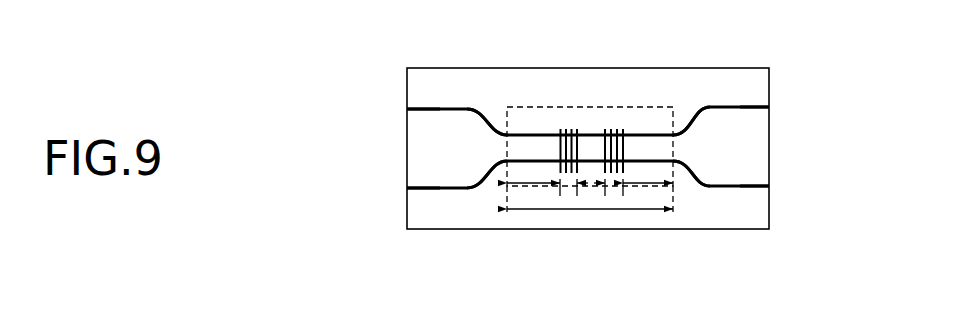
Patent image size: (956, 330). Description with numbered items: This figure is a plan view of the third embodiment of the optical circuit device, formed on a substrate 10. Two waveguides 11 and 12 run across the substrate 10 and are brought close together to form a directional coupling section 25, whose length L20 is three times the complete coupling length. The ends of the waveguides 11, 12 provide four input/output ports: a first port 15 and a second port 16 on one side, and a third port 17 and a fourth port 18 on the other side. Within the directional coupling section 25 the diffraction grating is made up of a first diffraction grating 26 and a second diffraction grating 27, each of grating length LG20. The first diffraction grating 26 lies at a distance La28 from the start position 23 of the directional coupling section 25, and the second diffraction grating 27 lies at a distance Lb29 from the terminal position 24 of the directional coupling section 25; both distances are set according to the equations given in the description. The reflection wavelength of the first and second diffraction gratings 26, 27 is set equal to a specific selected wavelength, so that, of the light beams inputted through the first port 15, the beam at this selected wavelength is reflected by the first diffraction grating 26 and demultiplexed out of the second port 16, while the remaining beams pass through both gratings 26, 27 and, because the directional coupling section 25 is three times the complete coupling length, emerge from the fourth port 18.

The substrate 10 is at (732, 68).
The waveguide 11 is at (444, 109).
The waveguide 12 is at (418, 190).
The first port 15 is at (407, 109).
The second port 16 is at (407, 188).
The third port 17 is at (771, 106).
The fourth port 18 is at (771, 185).
The start position 23 is at (498, 124).
The terminal position 24 is at (680, 113).
The directional coupling section 25 is at (552, 107).
The first diffraction grating 26 is at (573, 128).
The second diffraction grating 27 is at (617, 128).
The length of directional coupling section L20 is at (527, 211).
The distance from start position to first diffraction grating La28 is at (539, 186).
The grating length LG20 is at (570, 186).
The distance from terminal position to second diffraction grating Lb29 is at (649, 186).